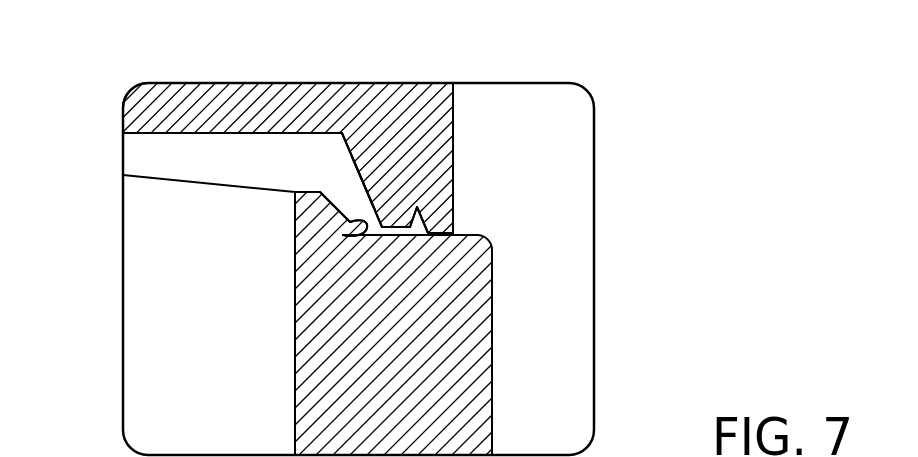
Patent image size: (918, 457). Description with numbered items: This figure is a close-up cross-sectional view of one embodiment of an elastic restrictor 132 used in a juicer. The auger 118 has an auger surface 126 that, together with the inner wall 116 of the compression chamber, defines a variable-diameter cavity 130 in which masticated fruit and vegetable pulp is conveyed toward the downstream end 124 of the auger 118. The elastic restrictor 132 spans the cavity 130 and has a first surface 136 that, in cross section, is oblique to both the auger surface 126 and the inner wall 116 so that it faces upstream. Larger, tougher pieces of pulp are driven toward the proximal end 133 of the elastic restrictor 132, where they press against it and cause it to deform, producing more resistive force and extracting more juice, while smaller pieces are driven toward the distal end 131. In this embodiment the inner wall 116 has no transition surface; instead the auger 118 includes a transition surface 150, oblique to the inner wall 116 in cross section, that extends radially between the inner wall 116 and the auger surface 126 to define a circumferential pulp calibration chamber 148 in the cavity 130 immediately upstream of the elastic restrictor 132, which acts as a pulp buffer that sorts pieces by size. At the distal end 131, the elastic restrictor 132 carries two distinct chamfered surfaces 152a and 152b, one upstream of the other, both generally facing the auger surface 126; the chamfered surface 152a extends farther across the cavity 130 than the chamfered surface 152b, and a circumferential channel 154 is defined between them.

The inner wall 116 is at (253, 136).
The auger 118 is at (138, 377).
The downstream end 124 is at (492, 372).
The auger surface 126 is at (225, 183).
The variable-diameter cavity 130 is at (162, 157).
The distal end 131 is at (460, 229).
The elastic restrictor 132 is at (395, 102).
The proximal end 133 is at (458, 147).
The first surface 136 is at (364, 189).
The circumferential pulp calibration chamber 148 is at (328, 178).
The transition surface 150 is at (363, 236).
The first chamfered surface 152a is at (428, 239).
The second chamfered surface 152b is at (393, 231).
The circumferential channel 154 is at (427, 247).